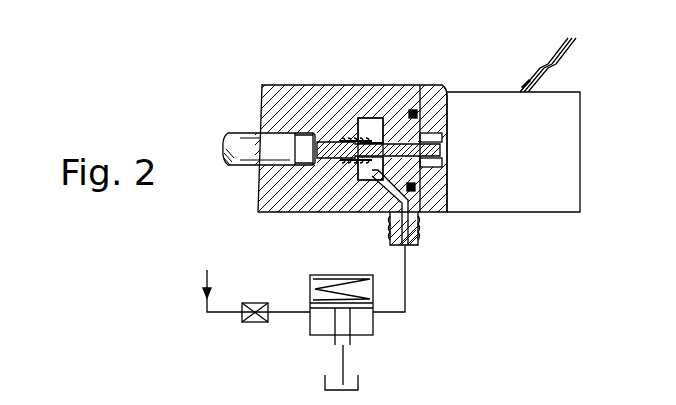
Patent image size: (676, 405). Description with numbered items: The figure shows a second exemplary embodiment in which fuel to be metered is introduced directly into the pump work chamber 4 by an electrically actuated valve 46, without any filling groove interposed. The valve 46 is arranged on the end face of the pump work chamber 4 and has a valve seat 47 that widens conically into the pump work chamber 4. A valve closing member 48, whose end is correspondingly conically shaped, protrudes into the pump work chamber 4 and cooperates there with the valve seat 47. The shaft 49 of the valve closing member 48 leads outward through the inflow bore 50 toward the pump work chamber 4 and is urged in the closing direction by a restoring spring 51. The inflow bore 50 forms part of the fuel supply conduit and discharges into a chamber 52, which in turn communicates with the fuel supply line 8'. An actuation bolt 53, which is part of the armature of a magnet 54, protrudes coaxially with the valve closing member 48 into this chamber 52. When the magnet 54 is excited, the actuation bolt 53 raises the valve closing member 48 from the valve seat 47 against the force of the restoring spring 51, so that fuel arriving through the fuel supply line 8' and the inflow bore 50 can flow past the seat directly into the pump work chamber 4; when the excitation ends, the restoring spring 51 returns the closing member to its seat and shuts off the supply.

The pump work chamber 4 is at (305, 128).
The electrically actuated valve 46 is at (478, 82).
The valve seat 47 is at (332, 138).
The valve closing member 48 is at (371, 137).
The shaft 49 is at (365, 176).
The inflow bore 50 is at (333, 166).
The restoring spring 51 is at (347, 138).
The chamber 52 is at (392, 186).
The actuation bolt 53 is at (435, 96).
The magnet 54 is at (562, 126).
The fuel supply line 8' is at (413, 278).